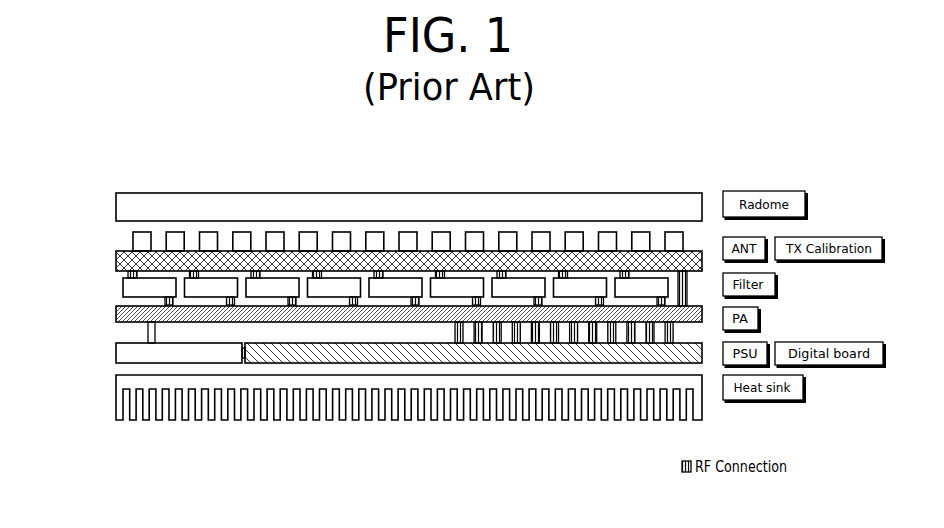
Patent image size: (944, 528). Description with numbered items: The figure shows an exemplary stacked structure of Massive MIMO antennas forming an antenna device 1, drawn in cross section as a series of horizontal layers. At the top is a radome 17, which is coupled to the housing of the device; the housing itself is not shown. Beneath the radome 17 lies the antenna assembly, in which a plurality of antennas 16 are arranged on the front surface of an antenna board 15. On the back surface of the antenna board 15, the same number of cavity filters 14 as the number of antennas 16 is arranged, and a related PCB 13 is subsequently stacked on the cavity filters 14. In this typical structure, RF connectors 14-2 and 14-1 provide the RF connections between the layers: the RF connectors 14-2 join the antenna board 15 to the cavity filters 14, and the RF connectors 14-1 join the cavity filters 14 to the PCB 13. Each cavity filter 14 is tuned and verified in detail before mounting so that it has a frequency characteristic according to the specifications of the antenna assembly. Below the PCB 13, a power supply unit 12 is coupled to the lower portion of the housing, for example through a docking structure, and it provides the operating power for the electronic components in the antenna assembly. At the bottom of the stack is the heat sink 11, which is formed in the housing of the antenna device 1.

The antenna device 1 is at (162, 147).
The radome 17 is at (132, 206).
The antennas 16 is at (146, 240).
The antenna board 15 is at (122, 263).
The RF connector 14-2 is at (129, 277).
The cavity filters 14 is at (136, 292).
The RF connector 14-1 is at (166, 302).
The PCB 13 is at (122, 312).
The power supply unit 12 is at (126, 352).
The heat sink 11 is at (123, 383).